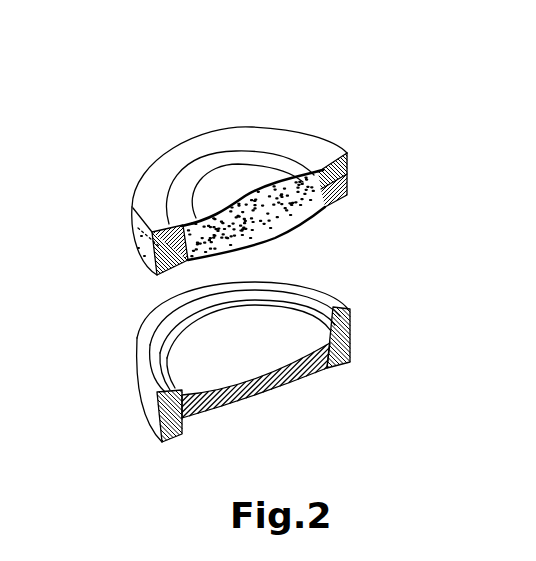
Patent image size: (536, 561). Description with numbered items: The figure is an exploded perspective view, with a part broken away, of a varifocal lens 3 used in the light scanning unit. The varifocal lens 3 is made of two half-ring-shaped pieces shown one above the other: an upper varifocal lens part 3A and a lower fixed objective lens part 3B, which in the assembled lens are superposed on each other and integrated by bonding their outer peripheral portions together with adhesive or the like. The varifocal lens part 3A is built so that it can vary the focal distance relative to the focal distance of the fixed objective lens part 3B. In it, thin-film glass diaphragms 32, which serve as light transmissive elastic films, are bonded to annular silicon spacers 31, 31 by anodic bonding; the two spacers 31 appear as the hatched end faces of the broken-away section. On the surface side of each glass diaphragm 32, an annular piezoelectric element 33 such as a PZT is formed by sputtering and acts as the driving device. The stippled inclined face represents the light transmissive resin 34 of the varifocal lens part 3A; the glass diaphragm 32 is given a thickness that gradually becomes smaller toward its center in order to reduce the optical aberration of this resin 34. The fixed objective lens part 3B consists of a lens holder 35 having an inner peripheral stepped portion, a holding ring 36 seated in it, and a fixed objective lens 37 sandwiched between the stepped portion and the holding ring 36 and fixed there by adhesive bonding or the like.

The varifocal lens 3 is at (278, 126).
The varifocal lens part 3A is at (148, 158).
The fixed objective lens part 3B is at (140, 325).
The annular silicon spacer 31 is at (350, 160).
The thin-film glass diaphragm 32 is at (317, 143).
The piezoelectric element 33 is at (200, 162).
The light transmissive resin 34 is at (289, 222).
The lens holder 35 is at (352, 355).
The holding ring 36 is at (323, 313).
The fixed objective lens 37 is at (270, 393).